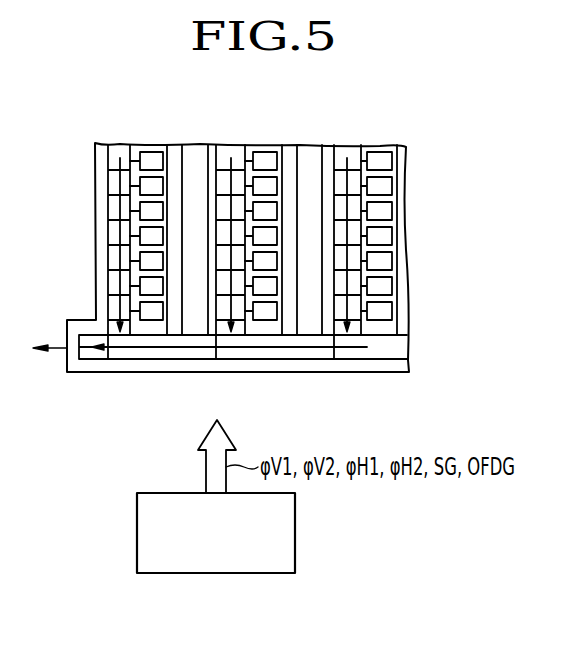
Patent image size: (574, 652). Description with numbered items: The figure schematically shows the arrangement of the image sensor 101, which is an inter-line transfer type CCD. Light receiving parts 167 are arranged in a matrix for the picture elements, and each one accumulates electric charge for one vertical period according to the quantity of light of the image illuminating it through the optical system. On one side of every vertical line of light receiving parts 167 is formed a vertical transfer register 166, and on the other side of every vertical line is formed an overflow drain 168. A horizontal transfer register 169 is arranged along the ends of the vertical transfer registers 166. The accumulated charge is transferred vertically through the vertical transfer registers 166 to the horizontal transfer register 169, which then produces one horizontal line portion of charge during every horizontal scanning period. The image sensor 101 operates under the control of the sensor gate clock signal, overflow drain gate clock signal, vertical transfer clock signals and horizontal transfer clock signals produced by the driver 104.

The image sensor 101 is at (86, 231).
The vertical transfer register 166 is at (121, 153).
The light receiving part 167 is at (148, 153).
The overflow drain 168 is at (195, 155).
The horizontal transfer register 169 is at (133, 360).
The driver 104 is at (295, 517).